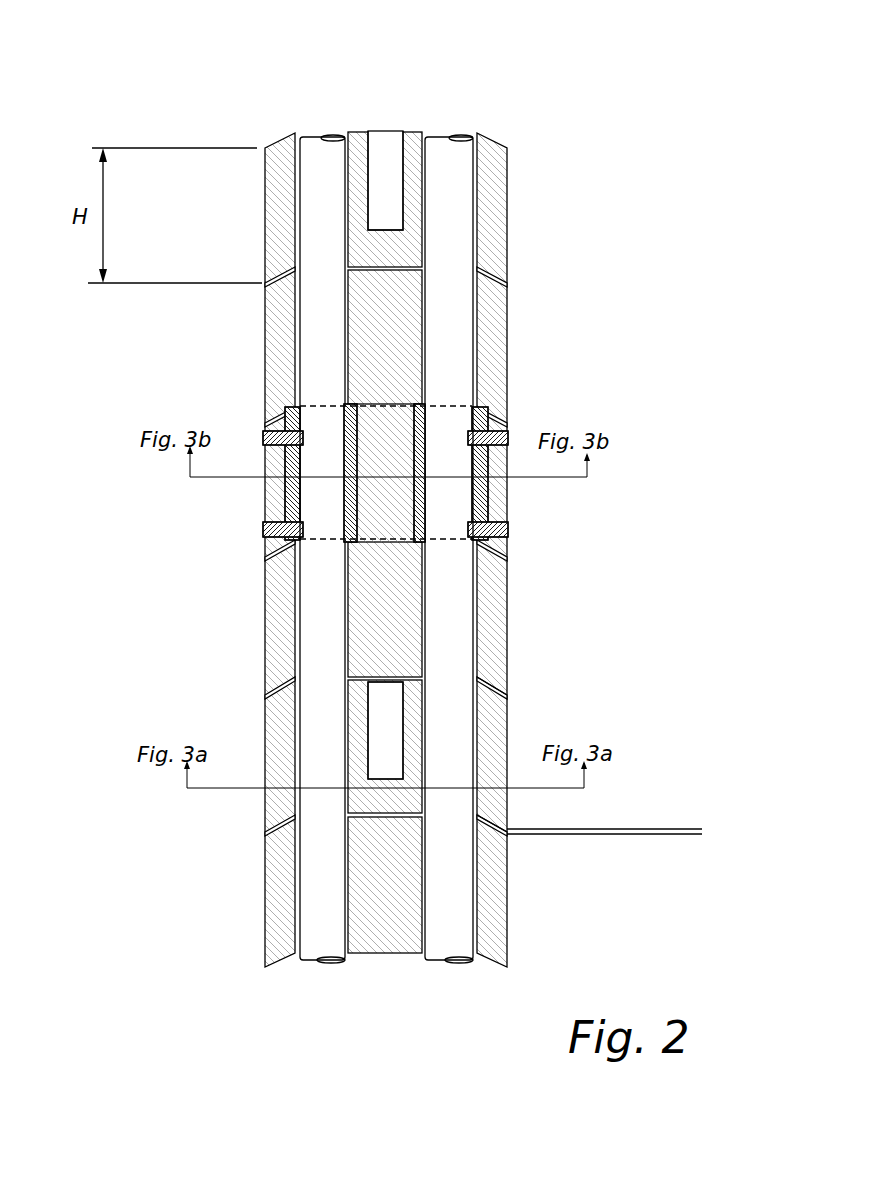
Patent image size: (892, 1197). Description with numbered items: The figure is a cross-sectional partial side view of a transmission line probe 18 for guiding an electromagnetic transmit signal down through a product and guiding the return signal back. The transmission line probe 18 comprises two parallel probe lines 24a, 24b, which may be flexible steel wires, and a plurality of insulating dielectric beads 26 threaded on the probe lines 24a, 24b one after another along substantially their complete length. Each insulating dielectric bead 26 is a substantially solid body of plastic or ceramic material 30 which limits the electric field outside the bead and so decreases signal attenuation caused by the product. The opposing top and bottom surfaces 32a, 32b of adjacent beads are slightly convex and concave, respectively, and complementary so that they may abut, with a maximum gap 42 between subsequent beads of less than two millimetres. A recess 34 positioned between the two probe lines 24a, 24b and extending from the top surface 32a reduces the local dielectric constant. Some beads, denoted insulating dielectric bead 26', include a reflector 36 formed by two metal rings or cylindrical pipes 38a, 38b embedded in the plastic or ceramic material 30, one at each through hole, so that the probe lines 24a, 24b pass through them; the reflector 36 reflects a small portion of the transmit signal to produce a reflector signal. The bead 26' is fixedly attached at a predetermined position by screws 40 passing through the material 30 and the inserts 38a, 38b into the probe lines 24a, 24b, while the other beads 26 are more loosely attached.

The transmission line probe 18 is at (100, 560).
The probe line 24a is at (322, 150).
The probe line 24b is at (452, 150).
The insulating dielectric bead 26 is at (376, 550).
The insulating dielectric bead including a reflector 26' is at (351, 466).
The plastic or ceramic material 30 is at (383, 542).
The top surface 32a is at (505, 553).
The bottom surface 32b is at (505, 684).
The recess 34 is at (403, 190).
The reflector 36 is at (508, 426).
The ring or cylindrical pipe 38a is at (350, 410).
The ring or cylindrical pipe 38b is at (418, 412).
The screw 40 is at (265, 437).
The gap 42 is at (675, 868).